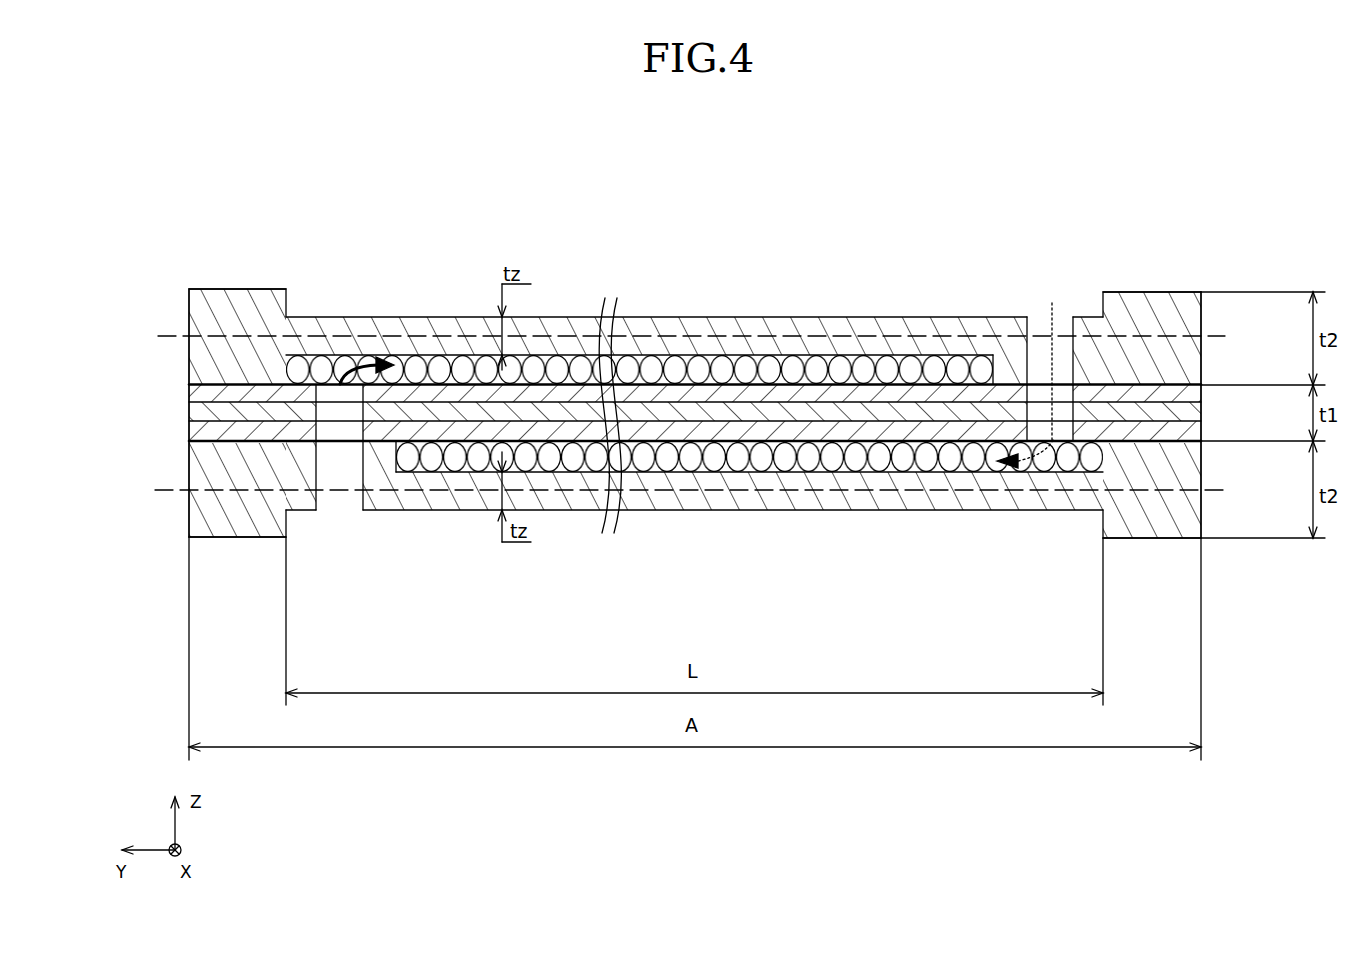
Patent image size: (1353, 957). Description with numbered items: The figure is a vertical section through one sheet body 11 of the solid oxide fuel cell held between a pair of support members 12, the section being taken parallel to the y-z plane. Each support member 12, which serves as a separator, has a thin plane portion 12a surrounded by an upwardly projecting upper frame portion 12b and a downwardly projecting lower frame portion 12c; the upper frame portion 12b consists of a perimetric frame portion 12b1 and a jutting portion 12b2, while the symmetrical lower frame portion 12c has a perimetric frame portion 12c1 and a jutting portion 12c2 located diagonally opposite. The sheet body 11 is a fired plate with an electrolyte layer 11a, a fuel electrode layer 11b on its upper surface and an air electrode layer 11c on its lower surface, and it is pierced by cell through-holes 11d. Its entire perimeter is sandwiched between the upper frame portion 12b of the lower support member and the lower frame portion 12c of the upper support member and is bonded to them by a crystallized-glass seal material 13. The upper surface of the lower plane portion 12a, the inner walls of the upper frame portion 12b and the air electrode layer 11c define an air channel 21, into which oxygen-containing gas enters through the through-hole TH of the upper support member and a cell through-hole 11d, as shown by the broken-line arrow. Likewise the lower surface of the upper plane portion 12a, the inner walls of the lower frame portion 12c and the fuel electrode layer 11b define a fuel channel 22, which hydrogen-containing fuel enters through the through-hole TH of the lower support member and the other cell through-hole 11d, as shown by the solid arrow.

The support member 12 is at (718, 193).
The plane portion 12a is at (665, 317).
The upper frame portion 12b is at (280, 238).
The perimetric frame portion 12b1 is at (222, 300).
The jutting portion 12b2 is at (378, 478).
The lower frame portion 12c is at (172, 378).
The perimetric frame portion 12c1 is at (210, 372).
The jutting portion 12c2 is at (1010, 370).
The seal material 13 is at (232, 378).
The sheet body 11 is at (740, 368).
The electrolyte layer 11a is at (848, 413).
The fuel electrode layer 11b is at (803, 390).
The air electrode layer 11c is at (908, 430).
The cell through-hole 11d is at (324, 412).
The through-hole TH is at (337, 390).
The air channel 21 is at (698, 469).
The fuel channel 22 is at (683, 379).